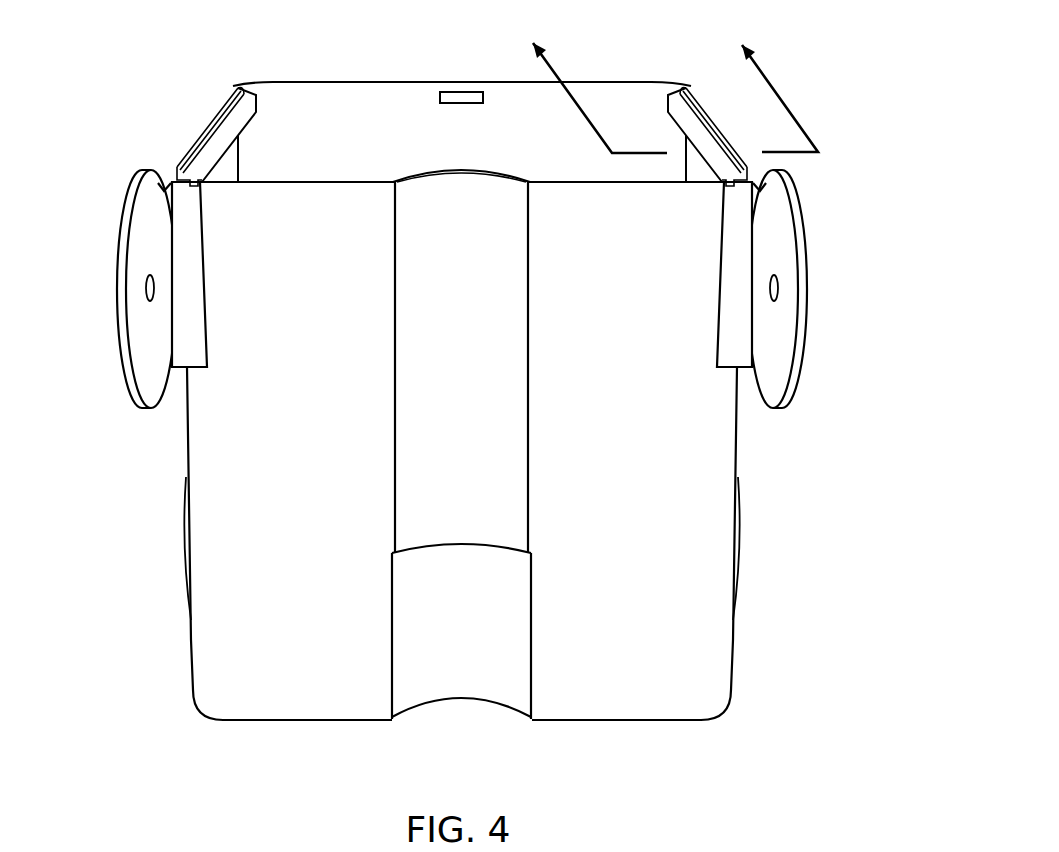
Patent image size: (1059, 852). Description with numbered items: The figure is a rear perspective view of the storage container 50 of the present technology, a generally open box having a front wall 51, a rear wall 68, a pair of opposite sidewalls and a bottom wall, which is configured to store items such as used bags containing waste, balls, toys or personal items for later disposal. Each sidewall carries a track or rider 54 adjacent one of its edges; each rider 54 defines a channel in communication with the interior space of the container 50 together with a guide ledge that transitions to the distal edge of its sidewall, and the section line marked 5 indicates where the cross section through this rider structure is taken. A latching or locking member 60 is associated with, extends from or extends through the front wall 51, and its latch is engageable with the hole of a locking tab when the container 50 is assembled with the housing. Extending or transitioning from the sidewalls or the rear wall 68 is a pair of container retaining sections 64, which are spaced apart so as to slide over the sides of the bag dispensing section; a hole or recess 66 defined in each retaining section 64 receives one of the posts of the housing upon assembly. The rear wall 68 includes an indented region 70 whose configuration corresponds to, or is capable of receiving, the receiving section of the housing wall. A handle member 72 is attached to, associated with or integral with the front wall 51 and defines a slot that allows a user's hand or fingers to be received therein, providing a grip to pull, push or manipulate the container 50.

The storage container 50 is at (460, 365).
The front wall 51 is at (343, 98).
The locking member 60 is at (460, 92).
The section line 5- 5 is at (669, 82).
The rider 54 is at (253, 121).
The container retaining section 64 is at (130, 173).
The recess 66 is at (148, 282).
The indented region 70 is at (440, 460).
The handle member 72 is at (181, 552).
The rear wall 68 is at (255, 680).